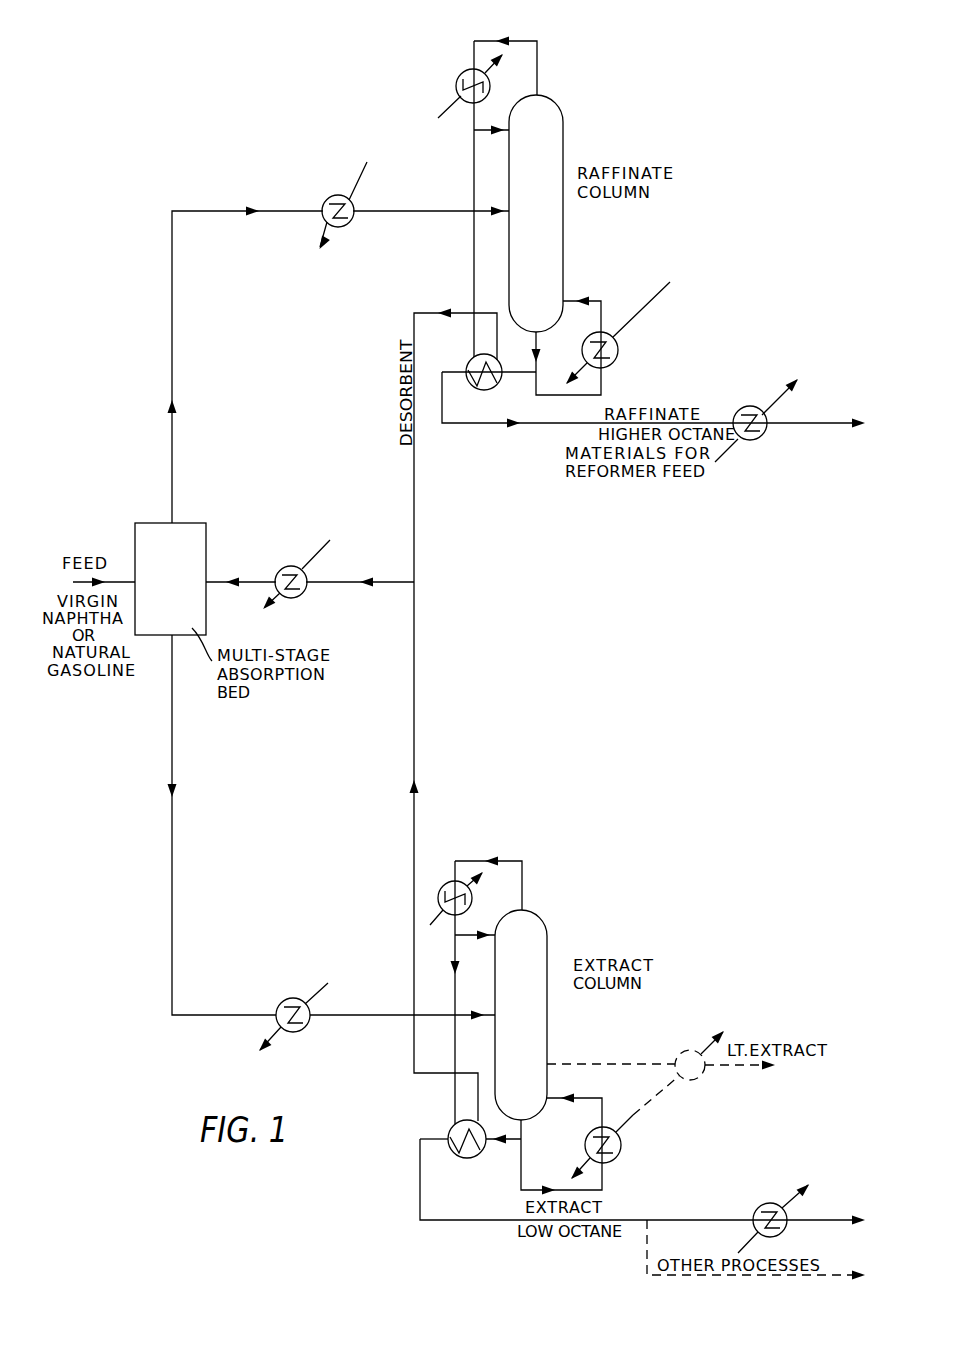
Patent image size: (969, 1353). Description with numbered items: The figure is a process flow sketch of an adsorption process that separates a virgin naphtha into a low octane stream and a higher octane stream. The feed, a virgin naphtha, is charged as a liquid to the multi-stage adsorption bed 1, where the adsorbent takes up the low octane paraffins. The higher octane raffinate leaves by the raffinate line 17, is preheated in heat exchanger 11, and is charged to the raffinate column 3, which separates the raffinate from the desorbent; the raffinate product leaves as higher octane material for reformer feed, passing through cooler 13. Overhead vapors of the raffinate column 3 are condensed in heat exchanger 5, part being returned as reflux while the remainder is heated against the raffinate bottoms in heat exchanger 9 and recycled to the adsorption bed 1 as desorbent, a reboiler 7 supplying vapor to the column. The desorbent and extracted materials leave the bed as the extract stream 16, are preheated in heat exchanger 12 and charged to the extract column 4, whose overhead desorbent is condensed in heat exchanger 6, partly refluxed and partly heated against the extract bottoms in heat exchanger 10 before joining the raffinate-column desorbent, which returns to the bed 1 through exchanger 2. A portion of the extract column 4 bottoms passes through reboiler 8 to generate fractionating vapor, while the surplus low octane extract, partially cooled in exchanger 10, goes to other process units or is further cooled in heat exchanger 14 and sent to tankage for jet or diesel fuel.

The multi-stage adsorption bed 1 is at (135, 540).
The heat exchanger on desorbent return line 2 is at (284, 567).
The raffinate column 3 is at (563, 206).
The extract column 4 is at (547, 995).
The heat exchanger 5 is at (458, 79).
The heat exchanger 6 is at (472, 898).
The reboiler of raffinate column 7 is at (618, 345).
The reboiler 8 is at (621, 1150).
The heat exchanger 9 is at (481, 390).
The heat exchanger 10 is at (467, 1158).
The heat exchanger 11 is at (353, 203).
The heat exchanger 12 is at (305, 1030).
The raffinate product cooler 13 is at (758, 440).
The heat exchanger 14 is at (766, 1204).
The extract stream 16 is at (171, 710).
The raffinate line from absorption bed 17 is at (215, 211).